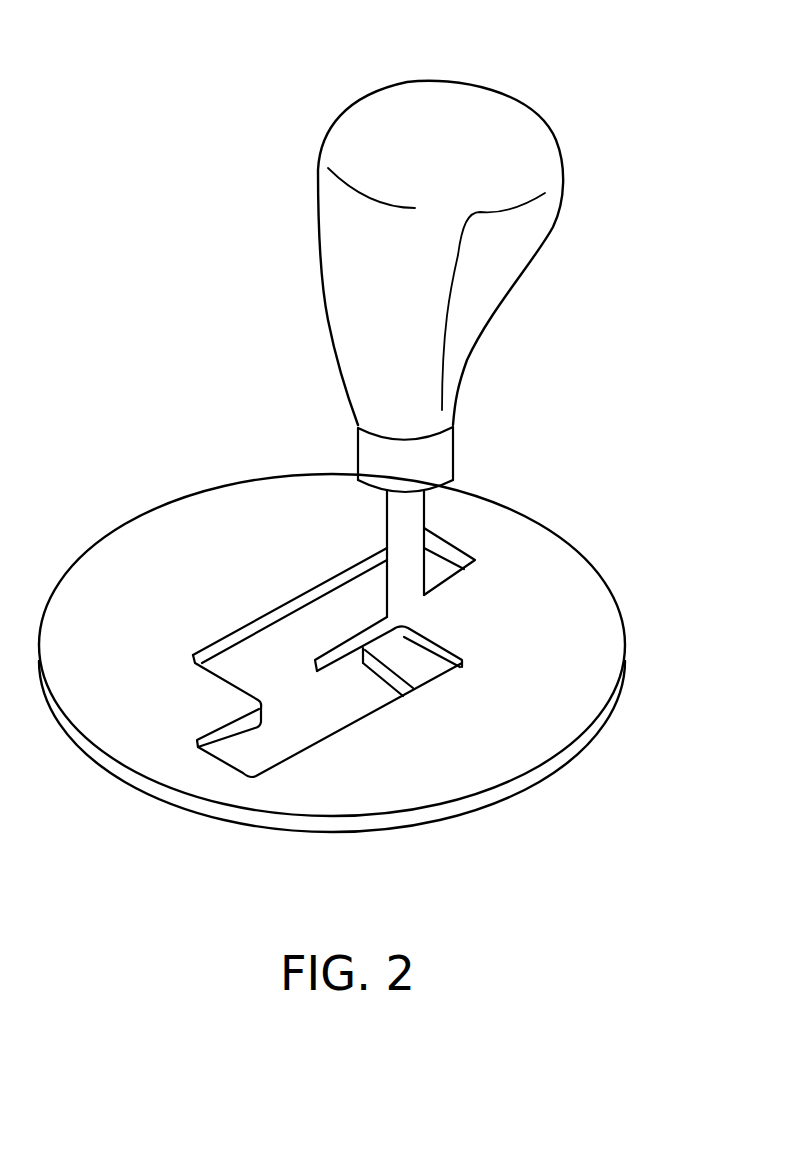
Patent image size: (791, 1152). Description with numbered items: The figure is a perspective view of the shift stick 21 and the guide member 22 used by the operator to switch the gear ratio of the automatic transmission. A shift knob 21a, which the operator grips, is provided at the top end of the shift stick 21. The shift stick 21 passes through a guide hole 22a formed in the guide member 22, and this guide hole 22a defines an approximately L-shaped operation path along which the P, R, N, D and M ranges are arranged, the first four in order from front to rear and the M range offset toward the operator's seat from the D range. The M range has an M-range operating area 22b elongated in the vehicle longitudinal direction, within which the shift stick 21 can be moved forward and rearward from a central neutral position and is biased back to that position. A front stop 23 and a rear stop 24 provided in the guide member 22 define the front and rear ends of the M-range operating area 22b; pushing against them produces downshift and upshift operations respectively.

The shift stick 21 is at (318, 111).
The shift knob 21a is at (450, 120).
The guide member 22 is at (567, 577).
The guide hole 22a is at (315, 628).
The M-range operating area 22b is at (362, 693).
The front stop 23 is at (424, 664).
The rear stop 24 is at (256, 757).